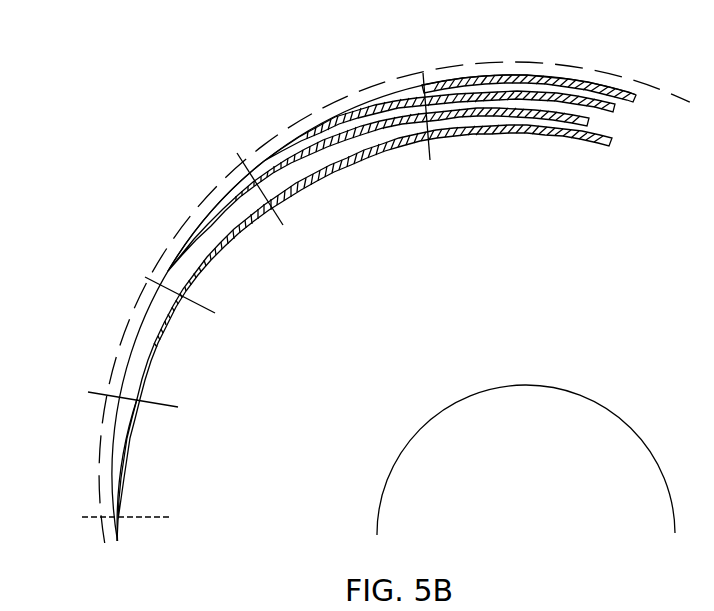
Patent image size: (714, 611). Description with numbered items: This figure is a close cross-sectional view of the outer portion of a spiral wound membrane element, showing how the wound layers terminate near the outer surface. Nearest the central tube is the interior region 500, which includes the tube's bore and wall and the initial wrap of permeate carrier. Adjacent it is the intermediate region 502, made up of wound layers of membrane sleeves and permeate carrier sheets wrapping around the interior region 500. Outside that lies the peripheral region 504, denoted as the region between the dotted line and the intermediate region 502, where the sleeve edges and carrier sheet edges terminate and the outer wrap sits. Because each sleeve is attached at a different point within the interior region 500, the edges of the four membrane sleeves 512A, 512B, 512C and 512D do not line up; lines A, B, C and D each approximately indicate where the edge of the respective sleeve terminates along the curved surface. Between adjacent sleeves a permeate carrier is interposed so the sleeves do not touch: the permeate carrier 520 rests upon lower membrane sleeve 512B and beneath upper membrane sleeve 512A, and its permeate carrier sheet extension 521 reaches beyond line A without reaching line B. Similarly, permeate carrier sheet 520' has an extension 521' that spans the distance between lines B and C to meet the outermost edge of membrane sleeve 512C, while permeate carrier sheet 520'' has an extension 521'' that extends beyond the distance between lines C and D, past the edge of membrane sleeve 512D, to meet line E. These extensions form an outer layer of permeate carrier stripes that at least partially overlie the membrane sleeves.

The interior region 500 is at (534, 486).
The intermediate region 502 is at (492, 318).
The peripheral region 504 is at (660, 143).
The membrane sleeve 512A is at (500, 72).
The membrane sleeve 512B is at (310, 123).
The membrane sleeve 512C is at (210, 220).
The membrane sleeve 512D is at (160, 323).
The permeate carrier 520 is at (532, 67).
The permeate carrier sheet 520' is at (458, 102).
The permeate carrier sheet 520'' is at (336, 189).
The permeate carrier sheet extension 521 is at (374, 290).
The permeate carrier sheet extension 521' is at (212, 216).
The permeate carrier sheet extension 521'' is at (83, 470).
The line A is at (431, 71).
The line B is at (254, 178).
The line C is at (171, 288).
The line D is at (122, 392).
The line E is at (115, 520).